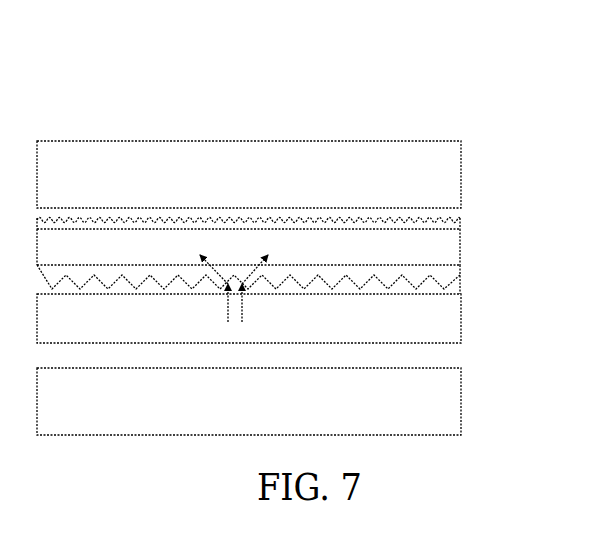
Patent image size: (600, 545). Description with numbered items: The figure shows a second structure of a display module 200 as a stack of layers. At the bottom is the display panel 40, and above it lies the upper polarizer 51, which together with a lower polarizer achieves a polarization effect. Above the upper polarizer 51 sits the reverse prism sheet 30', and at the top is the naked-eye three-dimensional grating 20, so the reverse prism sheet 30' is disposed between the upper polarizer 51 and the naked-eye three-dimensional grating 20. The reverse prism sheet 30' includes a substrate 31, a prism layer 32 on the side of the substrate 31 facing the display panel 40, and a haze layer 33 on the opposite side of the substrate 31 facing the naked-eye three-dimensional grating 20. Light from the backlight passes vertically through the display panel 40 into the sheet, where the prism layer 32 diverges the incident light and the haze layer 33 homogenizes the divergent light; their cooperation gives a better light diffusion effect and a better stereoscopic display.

The display module 200 is at (297, 48).
The naked-eye 3D grating 20 is at (440, 175).
The reverse prism sheet 30' is at (309, 251).
The haze layer 33 is at (458, 227).
The substrate 31 is at (453, 247).
The prism layer 32 is at (282, 284).
The upper polarizer 51 is at (442, 318).
The display panel 40 is at (442, 402).